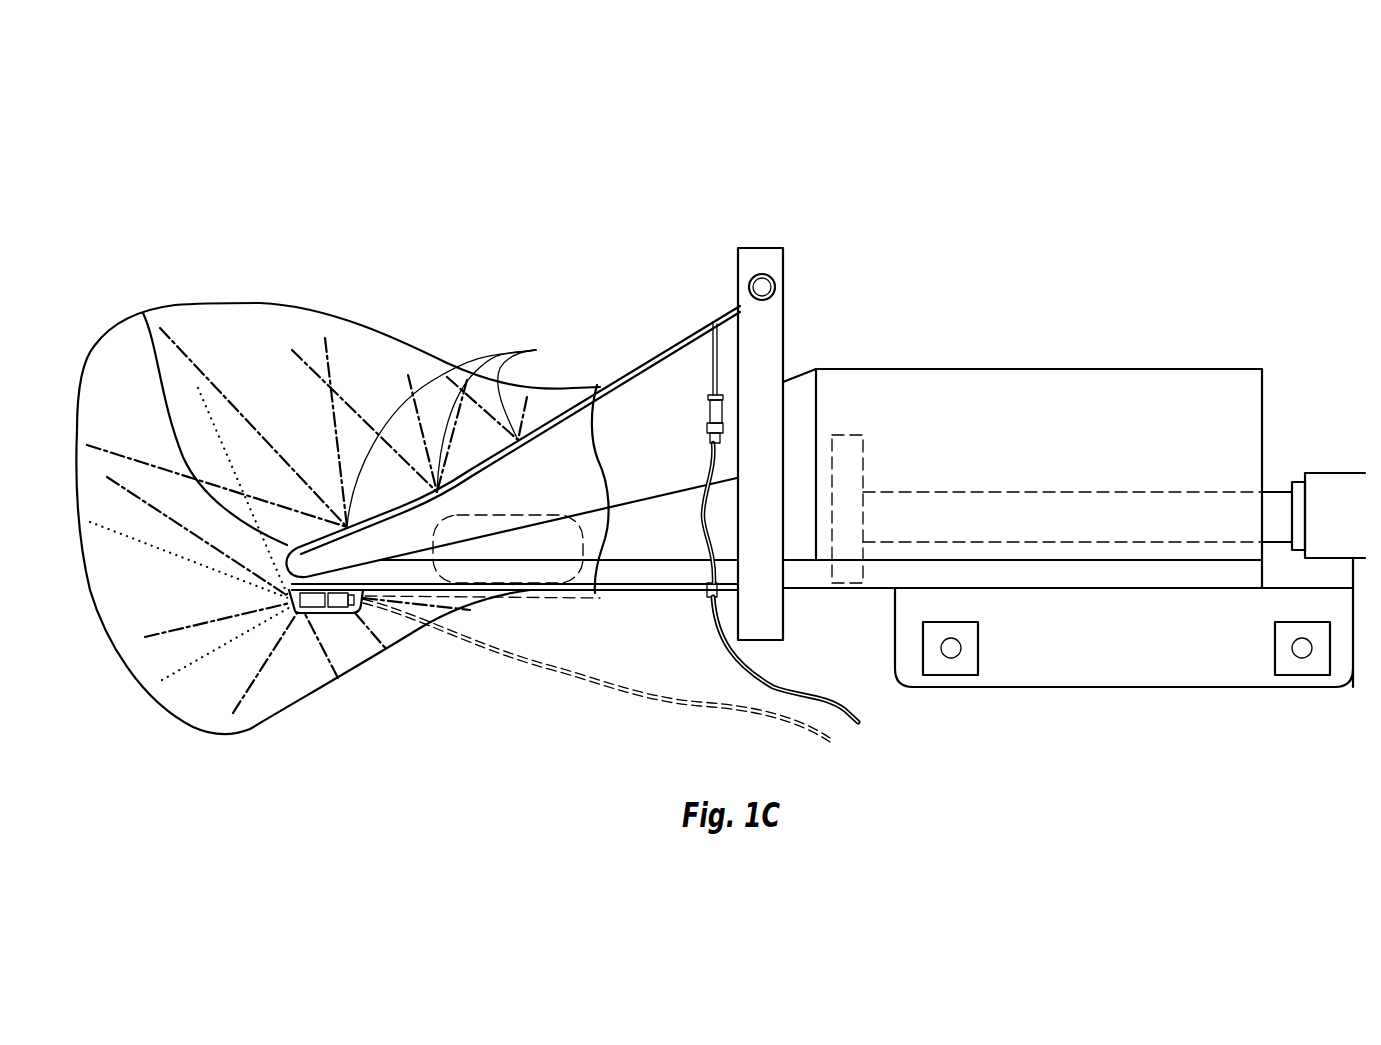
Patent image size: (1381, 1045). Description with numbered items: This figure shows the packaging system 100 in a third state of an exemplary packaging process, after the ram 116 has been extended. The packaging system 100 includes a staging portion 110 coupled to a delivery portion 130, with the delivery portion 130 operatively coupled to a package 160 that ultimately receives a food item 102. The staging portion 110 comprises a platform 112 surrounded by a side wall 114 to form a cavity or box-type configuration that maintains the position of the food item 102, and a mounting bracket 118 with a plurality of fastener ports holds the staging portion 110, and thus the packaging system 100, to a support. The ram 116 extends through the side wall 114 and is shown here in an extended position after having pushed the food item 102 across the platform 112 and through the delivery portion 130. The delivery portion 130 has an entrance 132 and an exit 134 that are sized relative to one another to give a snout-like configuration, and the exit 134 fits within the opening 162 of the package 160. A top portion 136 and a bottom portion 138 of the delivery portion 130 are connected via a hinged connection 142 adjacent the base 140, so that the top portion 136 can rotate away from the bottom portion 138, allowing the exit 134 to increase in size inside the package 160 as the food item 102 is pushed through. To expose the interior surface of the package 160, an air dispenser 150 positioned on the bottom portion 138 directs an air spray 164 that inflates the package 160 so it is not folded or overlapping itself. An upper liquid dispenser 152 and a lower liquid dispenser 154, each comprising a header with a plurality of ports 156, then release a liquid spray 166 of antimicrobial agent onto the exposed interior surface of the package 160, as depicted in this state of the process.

The packaging system 100 is at (732, 148).
The food item 102 is at (527, 548).
The staging portion 110 is at (1000, 352).
The platform 112 is at (842, 590).
The side wall 114 is at (1127, 390).
The ram 116 is at (853, 458).
The mounting bracket 118 is at (1212, 680).
The delivery portion 130 is at (582, 310).
The entrance 132 is at (816, 369).
The exit 134 is at (143, 313).
The top portion 136 is at (673, 373).
The bottom portion 138 is at (650, 545).
The base 140 is at (763, 408).
The hinged connection 142 is at (775, 282).
The air dispenser 150 is at (338, 600).
The upper liquid dispenser 152 is at (306, 613).
The lower liquid dispenser 154 is at (597, 383).
The ports 156 is at (420, 660).
The package 160 is at (148, 757).
The opening 162 is at (597, 450).
The air spray 164 is at (212, 418).
The liquid spray 166 is at (173, 342).